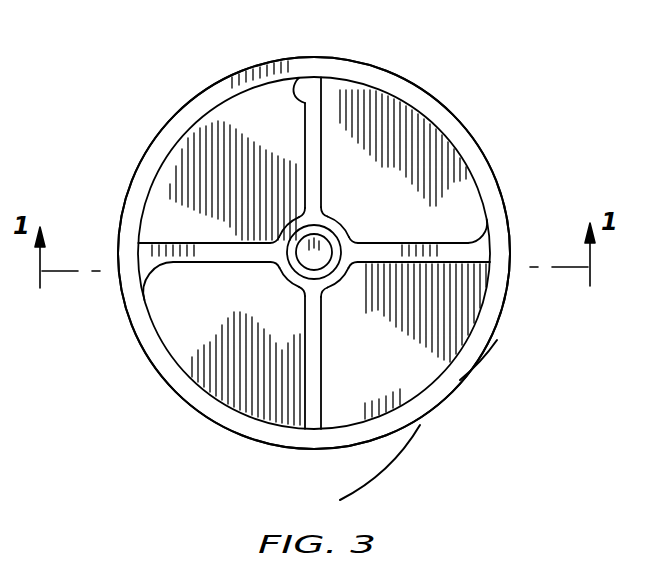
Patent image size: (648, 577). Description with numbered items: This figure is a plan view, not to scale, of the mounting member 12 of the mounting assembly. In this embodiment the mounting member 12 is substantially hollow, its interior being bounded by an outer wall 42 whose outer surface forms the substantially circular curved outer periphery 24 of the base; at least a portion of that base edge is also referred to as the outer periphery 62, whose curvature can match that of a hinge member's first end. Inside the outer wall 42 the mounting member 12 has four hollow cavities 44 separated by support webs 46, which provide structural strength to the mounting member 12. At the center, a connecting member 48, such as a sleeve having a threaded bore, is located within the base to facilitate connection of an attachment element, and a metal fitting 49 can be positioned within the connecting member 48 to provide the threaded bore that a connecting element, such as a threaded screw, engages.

The mounting member 12 is at (219, 422).
The curved outer periphery 24 is at (376, 438).
The outer wall 42 is at (497, 320).
The hollow cavity 44 is at (243, 117).
The support web 46 is at (301, 78).
The connecting member 48 is at (352, 236).
The metal fitting 49 is at (282, 269).
The outer periphery 62 is at (481, 365).